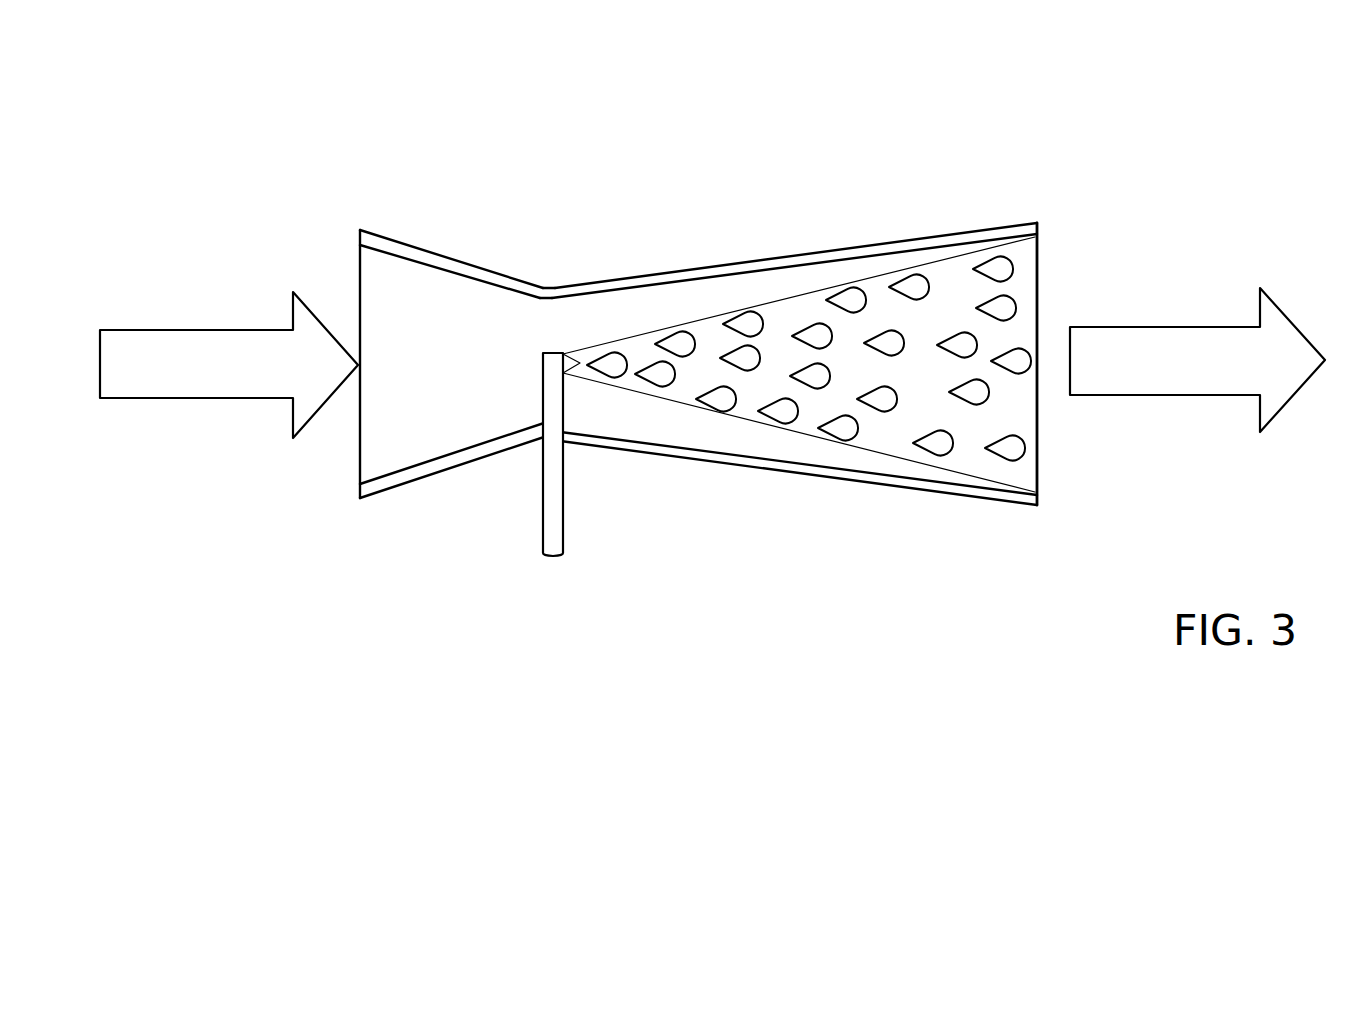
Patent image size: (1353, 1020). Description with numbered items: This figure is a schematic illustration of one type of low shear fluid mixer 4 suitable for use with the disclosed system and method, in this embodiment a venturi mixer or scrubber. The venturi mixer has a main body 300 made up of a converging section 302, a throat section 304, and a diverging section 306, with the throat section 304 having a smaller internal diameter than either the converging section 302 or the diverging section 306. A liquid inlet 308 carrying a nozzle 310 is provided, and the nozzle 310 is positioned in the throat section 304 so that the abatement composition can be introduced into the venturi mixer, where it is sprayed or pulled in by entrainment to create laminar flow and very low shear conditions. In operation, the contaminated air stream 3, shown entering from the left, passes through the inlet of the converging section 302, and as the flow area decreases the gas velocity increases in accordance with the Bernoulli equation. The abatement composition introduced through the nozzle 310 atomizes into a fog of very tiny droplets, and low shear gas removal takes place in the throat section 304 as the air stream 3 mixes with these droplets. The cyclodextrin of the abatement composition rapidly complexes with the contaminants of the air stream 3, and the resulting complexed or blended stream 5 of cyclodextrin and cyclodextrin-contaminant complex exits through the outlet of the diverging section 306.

The air stream 3 is at (197, 328).
The low shear fluid mixer 4 is at (148, 88).
The complexed or blended stream 5 is at (1220, 327).
The main body 300 is at (923, 230).
The converging section 302 is at (452, 258).
The throat section 304 is at (552, 287).
The diverging section 306 is at (798, 250).
The liquid inlet 308 is at (542, 515).
The nozzle 310 is at (558, 352).